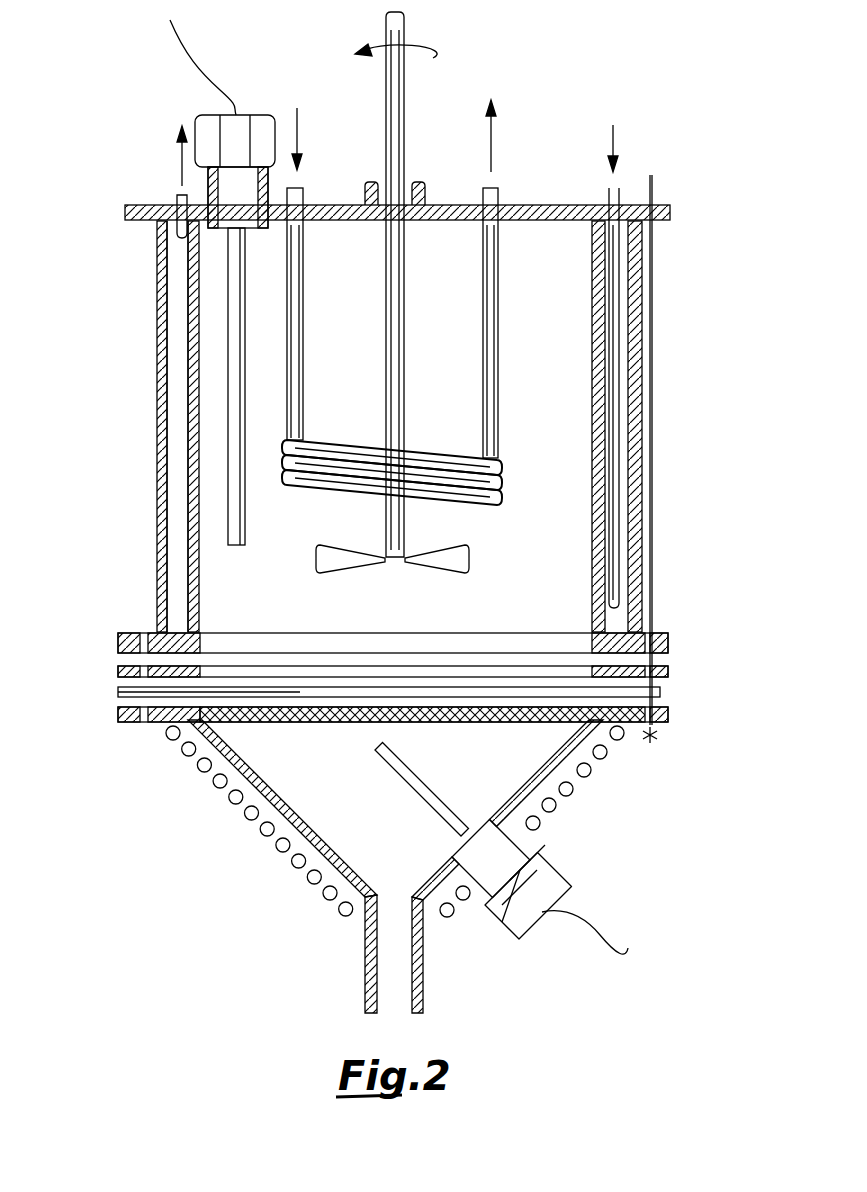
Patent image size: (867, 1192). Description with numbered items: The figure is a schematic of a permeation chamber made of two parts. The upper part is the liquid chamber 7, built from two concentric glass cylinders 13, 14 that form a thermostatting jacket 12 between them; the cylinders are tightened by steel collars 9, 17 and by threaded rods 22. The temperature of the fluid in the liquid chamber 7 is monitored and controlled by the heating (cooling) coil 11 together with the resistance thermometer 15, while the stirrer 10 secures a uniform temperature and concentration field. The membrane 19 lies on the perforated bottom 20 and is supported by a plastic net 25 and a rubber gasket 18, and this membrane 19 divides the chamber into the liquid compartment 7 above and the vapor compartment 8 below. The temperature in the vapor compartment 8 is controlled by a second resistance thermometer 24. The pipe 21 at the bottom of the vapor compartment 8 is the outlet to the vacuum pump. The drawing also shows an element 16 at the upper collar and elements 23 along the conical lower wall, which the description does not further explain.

The liquid chamber 7 is at (257, 598).
The vapor compartment 8 is at (396, 864).
The steel collar 9 is at (155, 205).
The stirrer 10 is at (405, 110).
The heating (cooling) coil 11 is at (498, 188).
The thermostatting jacket 12 is at (175, 545).
The glass cylinder 13 is at (158, 510).
The glass cylinder 14 is at (192, 583).
The resistance thermometer 15 is at (248, 113).
The gas outlet tube 16 is at (548, 212).
The steel collar 17 is at (668, 633).
The rubber gasket 18 is at (668, 673).
The membrane 19 is at (660, 692).
The perforated bottom 20 is at (668, 718).
The pipe 21 is at (365, 945).
The threaded rods 22 is at (652, 345).
The heating elements 23 is at (541, 822).
The resistance thermometer 24 is at (503, 860).
The plastic net 25 is at (168, 698).